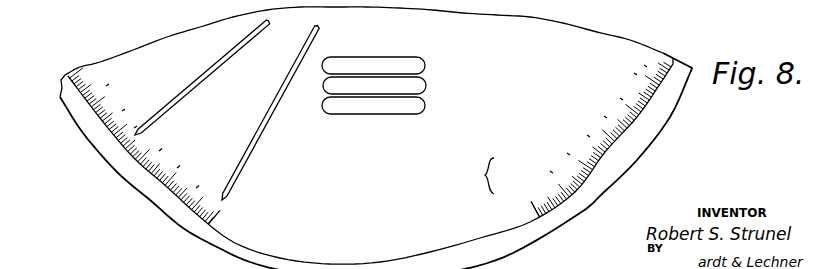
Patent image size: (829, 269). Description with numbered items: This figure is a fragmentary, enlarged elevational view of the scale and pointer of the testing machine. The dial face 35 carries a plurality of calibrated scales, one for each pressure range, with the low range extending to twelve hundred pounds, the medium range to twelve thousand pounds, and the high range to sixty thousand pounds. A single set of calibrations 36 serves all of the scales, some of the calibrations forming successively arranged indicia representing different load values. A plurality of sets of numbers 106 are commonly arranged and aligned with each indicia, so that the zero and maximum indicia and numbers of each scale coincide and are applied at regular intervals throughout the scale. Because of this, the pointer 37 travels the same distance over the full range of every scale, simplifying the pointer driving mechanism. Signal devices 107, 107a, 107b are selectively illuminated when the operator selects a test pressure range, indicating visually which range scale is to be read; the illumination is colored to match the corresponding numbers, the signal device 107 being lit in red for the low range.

The dial face 35 is at (369, 135).
The scale calibrations 36 is at (163, 160).
The pointer 37 is at (259, 145).
The sets of numbers 106 is at (487, 176).
The signal device 107 is at (427, 105).
The signal device 107a is at (427, 84).
The signal device 107b is at (426, 65).